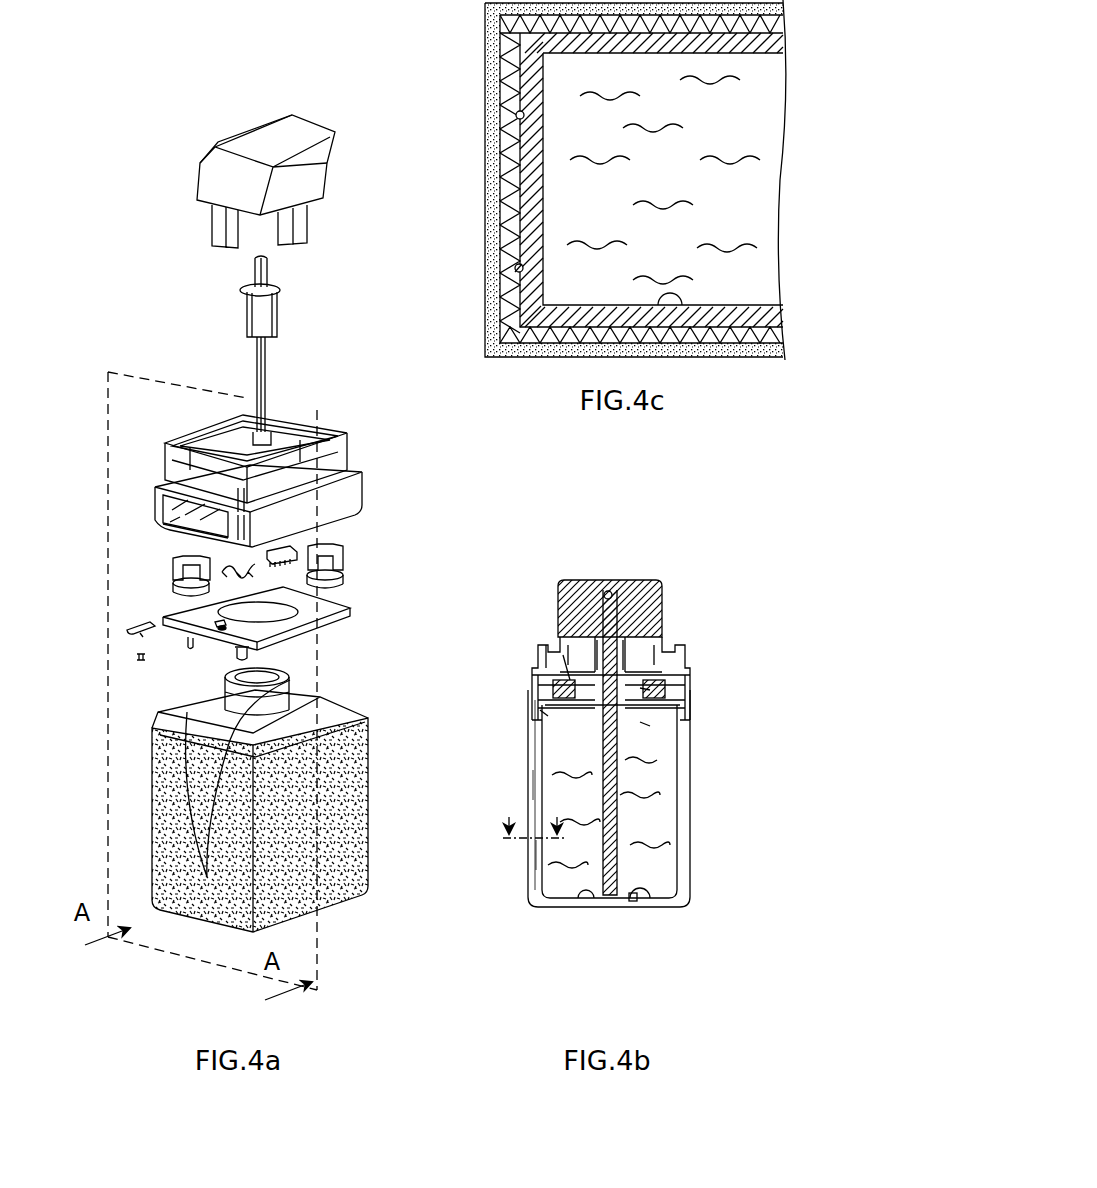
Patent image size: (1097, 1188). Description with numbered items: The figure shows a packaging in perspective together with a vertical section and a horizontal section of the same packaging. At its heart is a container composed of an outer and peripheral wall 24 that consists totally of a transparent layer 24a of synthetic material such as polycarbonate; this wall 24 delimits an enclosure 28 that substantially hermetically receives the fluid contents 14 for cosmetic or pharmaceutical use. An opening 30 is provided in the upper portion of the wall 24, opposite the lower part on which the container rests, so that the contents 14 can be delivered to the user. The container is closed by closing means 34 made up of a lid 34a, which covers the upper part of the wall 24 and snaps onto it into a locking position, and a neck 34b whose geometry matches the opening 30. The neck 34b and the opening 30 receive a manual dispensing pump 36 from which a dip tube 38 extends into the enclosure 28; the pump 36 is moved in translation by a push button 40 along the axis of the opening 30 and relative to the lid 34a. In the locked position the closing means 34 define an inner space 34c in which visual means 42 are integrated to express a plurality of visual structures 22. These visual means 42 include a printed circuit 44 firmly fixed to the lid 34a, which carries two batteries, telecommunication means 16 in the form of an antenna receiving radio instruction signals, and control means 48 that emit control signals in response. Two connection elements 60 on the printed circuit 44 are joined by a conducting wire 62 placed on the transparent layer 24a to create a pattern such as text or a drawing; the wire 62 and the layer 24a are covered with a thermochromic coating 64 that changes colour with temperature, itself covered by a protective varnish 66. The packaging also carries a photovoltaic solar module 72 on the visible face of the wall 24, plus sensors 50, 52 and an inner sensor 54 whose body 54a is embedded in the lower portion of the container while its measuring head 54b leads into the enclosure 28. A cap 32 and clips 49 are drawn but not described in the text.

In FIG. 4a, the contents 14 is at (293, 843).
In FIG. 4b, the contents 14 is at (608, 848).
In FIG. 4c, the contents 14 is at (663, 180).
In FIG. 4a, the telecommunication means 16 is at (563, 647).
In FIG. 4b, the visual structures 22 is at (537, 860).
In FIG. 4c, the visual structures 22 is at (514, 116).
In FIG. 4a, the outer and peripheral wall 24 is at (344, 811).
In FIG. 4b, the outer and peripheral wall 24 is at (528, 737).
In FIG. 4a, the transparent layer 24a is at (537, 762).
In FIG. 4b, the transparent layer 24a is at (535, 762).
In FIG. 4c, the transparent layer 24a is at (498, 30).
In FIG. 4b, the enclosure 28 is at (590, 900).
In FIG. 4c, the enclosure 28 is at (670, 307).
In FIG. 4a, the opening 30 is at (530, 703).
In FIG. 4a, the cap 32 is at (266, 181).
In FIG. 4a, the closing means 34 is at (322, 474).
In FIG. 4b, the closing means 34 is at (608, 696).
In FIG. 4a, the lid 34a is at (343, 460).
In FIG. 4b, the lid 34a is at (687, 675).
In FIG. 4a, the neck 34b is at (275, 428).
In FIG. 4b, the neck 34b is at (660, 655).
In FIG. 4a, the inner space 34c is at (327, 533).
In FIG. 4b, the inner space 34c is at (667, 702).
In FIG. 4a, the manual dispensing pump 36 is at (267, 315).
In FIG. 4b, the manual dispensing pump 36 is at (627, 660).
In FIG. 4a, the dip tube 38 is at (267, 385).
In FIG. 4b, the dip tube 38 is at (608, 800).
In FIG. 4a, the push button 40 is at (267, 270).
In FIG. 4b, the push button 40 is at (622, 607).
In FIG. 4b, the visual means 42 is at (643, 690).
In FIG. 4a, the printed circuit 44 is at (363, 623).
In FIG. 4b, the printed circuit 44 is at (640, 707).
In FIG. 4a, the control means 48 is at (267, 555).
In FIG. 4b, the control means 48 is at (645, 725).
In FIG. 4a, the clip 49 is at (173, 585).
In FIG. 4b, the clip 49 is at (656, 685).
In FIG. 4b, the sensor 50 is at (546, 650).
In FIG. 4a, the sensor 52 is at (150, 620).
In FIG. 4b, the inner sensor 54 is at (665, 935).
In FIG. 4b, the body 54a is at (640, 903).
In FIG. 4b, the measuring head 54b is at (648, 905).
In FIG. 4b, the connection elements 60 is at (697, 720).
In FIG. 4a, the conducting wire 62 is at (180, 797).
In FIG. 4b, the conducting wire 62 is at (533, 785).
In FIG. 4c, the conducting wire 62 is at (521, 272).
In FIG. 4c, the thermochromic coating 64 is at (508, 75).
In FIG. 4c, the protective varnish 66 is at (497, 102).
In FIG. 4a, the photovoltaic solar module 72 is at (158, 480).
In FIG. 4b, the photovoltaic solar module 72 is at (566, 672).